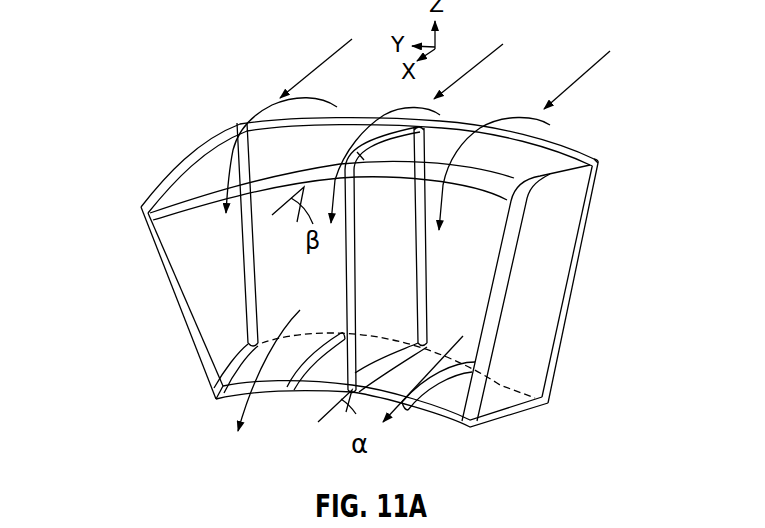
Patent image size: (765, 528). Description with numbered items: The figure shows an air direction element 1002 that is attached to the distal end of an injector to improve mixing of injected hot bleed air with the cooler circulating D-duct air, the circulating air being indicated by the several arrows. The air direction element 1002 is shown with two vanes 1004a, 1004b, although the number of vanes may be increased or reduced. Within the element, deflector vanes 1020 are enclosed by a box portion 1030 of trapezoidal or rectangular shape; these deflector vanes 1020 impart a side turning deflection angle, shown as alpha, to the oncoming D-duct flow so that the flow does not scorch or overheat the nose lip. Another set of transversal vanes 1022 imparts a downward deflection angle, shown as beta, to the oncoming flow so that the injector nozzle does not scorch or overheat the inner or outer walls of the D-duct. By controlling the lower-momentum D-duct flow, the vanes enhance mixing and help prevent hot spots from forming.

The air direction element 1002 is at (128, 214).
The vane 1004a is at (229, 117).
The vane 1004b is at (558, 152).
The deflector vane 1020 is at (197, 302).
The transversal vane 1022 is at (298, 391).
The box portion 1030 is at (158, 274).